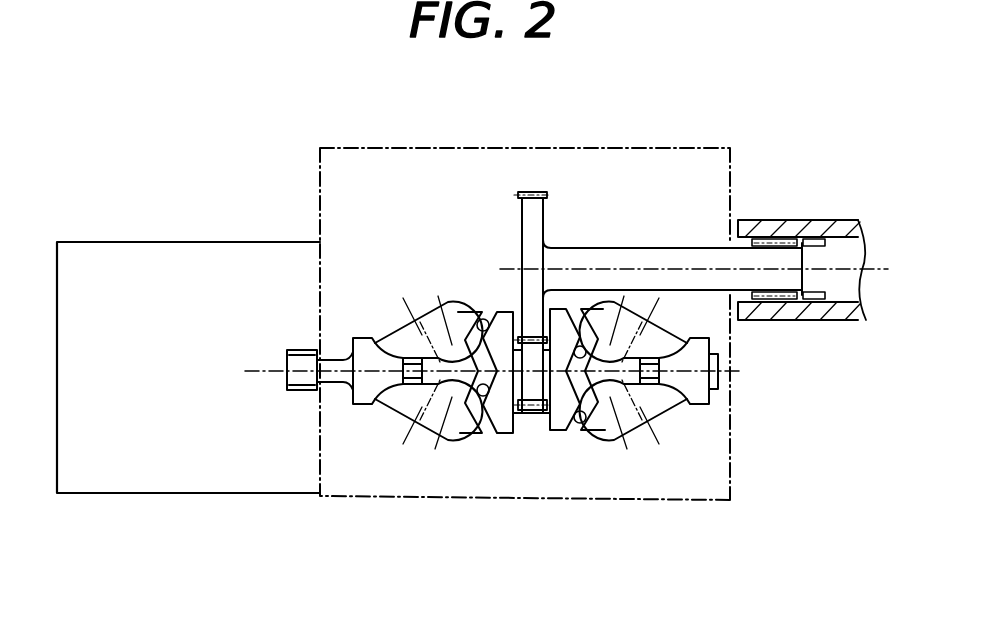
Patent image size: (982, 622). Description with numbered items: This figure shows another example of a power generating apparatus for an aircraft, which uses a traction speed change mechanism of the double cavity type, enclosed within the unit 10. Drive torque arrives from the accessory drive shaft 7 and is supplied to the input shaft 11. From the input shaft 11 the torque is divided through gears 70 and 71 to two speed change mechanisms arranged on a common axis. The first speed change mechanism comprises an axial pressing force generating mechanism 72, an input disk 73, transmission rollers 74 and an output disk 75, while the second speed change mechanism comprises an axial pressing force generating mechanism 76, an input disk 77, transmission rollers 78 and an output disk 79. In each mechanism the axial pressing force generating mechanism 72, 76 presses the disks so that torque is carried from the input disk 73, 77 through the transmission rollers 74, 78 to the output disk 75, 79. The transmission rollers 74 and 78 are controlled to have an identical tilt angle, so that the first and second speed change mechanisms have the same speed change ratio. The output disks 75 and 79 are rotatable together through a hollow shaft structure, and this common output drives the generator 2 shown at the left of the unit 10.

The generator 2 is at (148, 252).
The accessory drive shaft 7 is at (807, 226).
The transmission unit 10 is at (627, 162).
The input shaft 11 is at (670, 260).
The gear 70 is at (530, 235).
The gear 71 is at (531, 415).
The axial pressing force generating mechanism 72 is at (600, 439).
The input disk 73 is at (612, 400).
The transmission rollers 74 is at (658, 341).
The output disk 75 is at (700, 397).
The axial pressing force generating mechanism 76 is at (510, 439).
The input disk 77 is at (440, 298).
The transmission rollers 78 is at (400, 333).
The output disk 79 is at (362, 396).